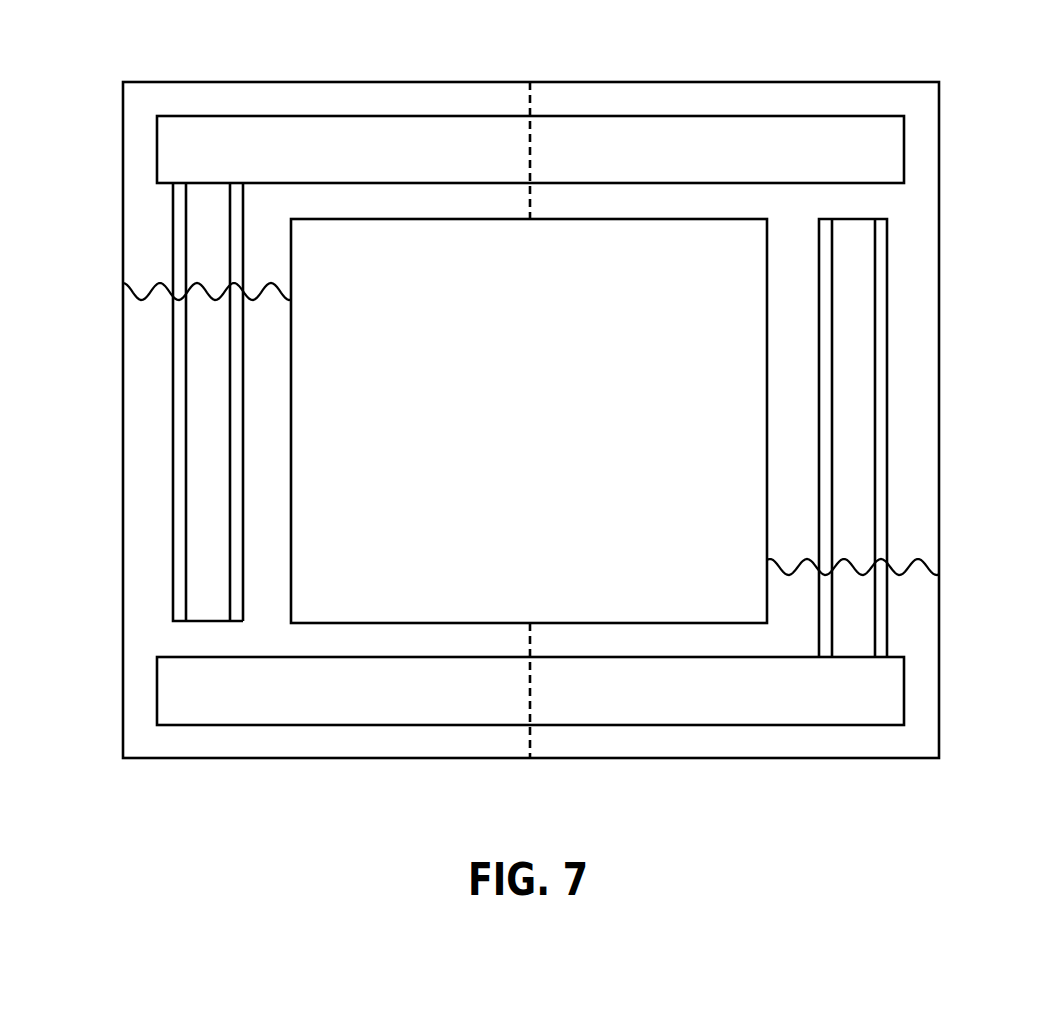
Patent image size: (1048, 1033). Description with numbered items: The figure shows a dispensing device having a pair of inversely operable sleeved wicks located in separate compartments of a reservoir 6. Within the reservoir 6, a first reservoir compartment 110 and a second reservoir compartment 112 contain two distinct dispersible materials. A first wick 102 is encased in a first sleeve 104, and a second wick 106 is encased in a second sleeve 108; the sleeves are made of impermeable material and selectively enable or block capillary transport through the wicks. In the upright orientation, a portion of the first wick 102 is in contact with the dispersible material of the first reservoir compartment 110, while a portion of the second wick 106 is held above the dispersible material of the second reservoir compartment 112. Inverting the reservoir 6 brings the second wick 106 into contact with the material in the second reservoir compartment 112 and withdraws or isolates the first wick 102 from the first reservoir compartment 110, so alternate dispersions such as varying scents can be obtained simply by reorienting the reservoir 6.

The reservoir 6 is at (532, 397).
The first wick 102 is at (203, 516).
The first sleeve 104 is at (172, 447).
The second wick 106 is at (856, 278).
The second sleeve 108 is at (889, 392).
The first reservoir compartment 110 is at (387, 97).
The second reservoir compartment 112 is at (673, 97).